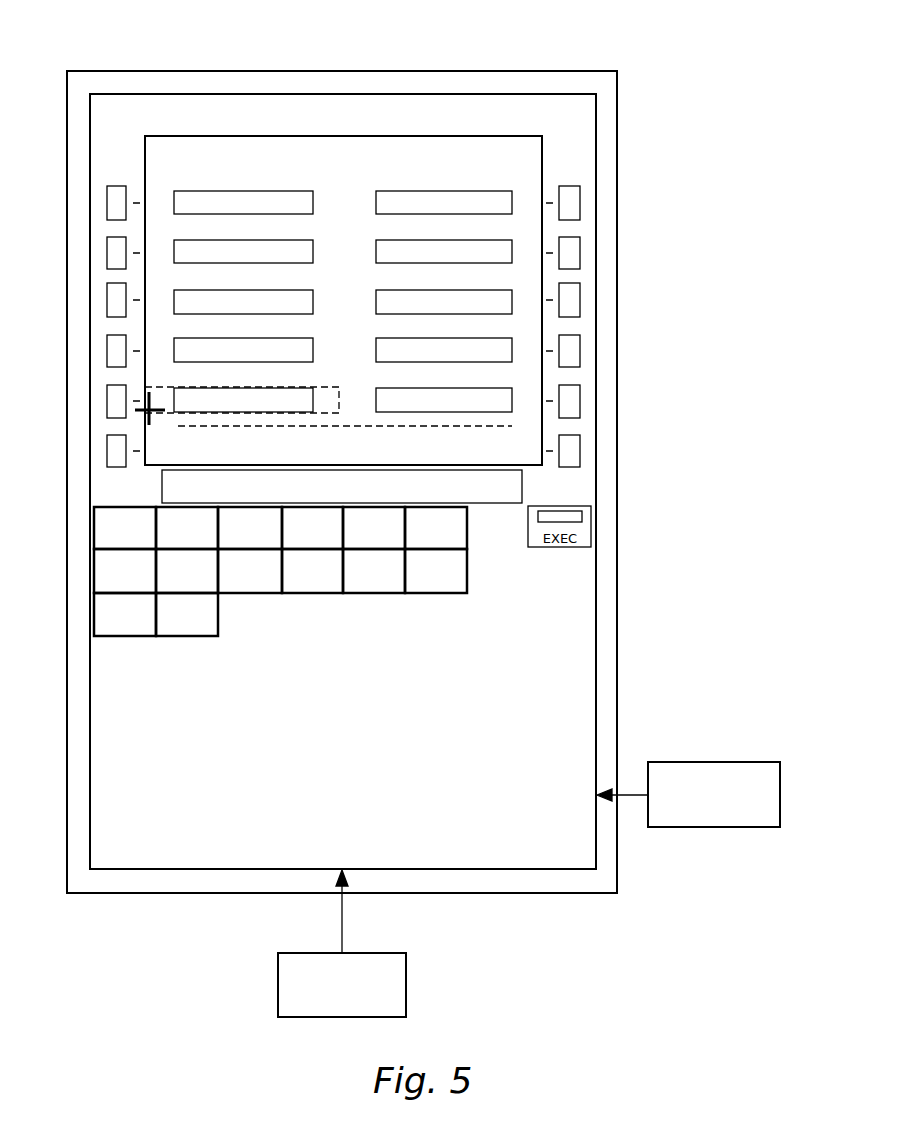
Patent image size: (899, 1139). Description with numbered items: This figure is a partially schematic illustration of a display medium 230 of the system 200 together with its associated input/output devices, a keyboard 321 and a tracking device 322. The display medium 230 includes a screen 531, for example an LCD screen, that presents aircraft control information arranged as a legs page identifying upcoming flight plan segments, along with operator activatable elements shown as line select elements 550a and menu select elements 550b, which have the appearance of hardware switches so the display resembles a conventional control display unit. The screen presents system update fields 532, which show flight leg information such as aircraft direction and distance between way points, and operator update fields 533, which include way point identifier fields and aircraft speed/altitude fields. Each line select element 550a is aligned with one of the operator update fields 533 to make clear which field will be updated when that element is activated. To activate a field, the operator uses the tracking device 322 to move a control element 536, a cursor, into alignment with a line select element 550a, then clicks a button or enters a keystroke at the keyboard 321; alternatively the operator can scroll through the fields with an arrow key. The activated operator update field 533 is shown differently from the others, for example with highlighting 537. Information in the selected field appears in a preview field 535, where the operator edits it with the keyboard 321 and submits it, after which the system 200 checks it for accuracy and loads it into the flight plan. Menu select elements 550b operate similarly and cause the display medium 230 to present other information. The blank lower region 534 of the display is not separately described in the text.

The system 200 is at (654, 63).
The display medium 230 is at (596, 606).
The screen 531 is at (594, 185).
The system update fields 532 is at (313, 225).
The operator update fields 533 is at (173, 297).
The blank display area 534 is at (150, 746).
The preview field 535 is at (165, 487).
The control element 536 is at (145, 410).
The highlighting 537 is at (165, 386).
The line select elements 550a is at (107, 300).
The menu select elements 550b is at (187, 637).
The keyboard 321 is at (727, 827).
The tracking device 322 is at (385, 953).